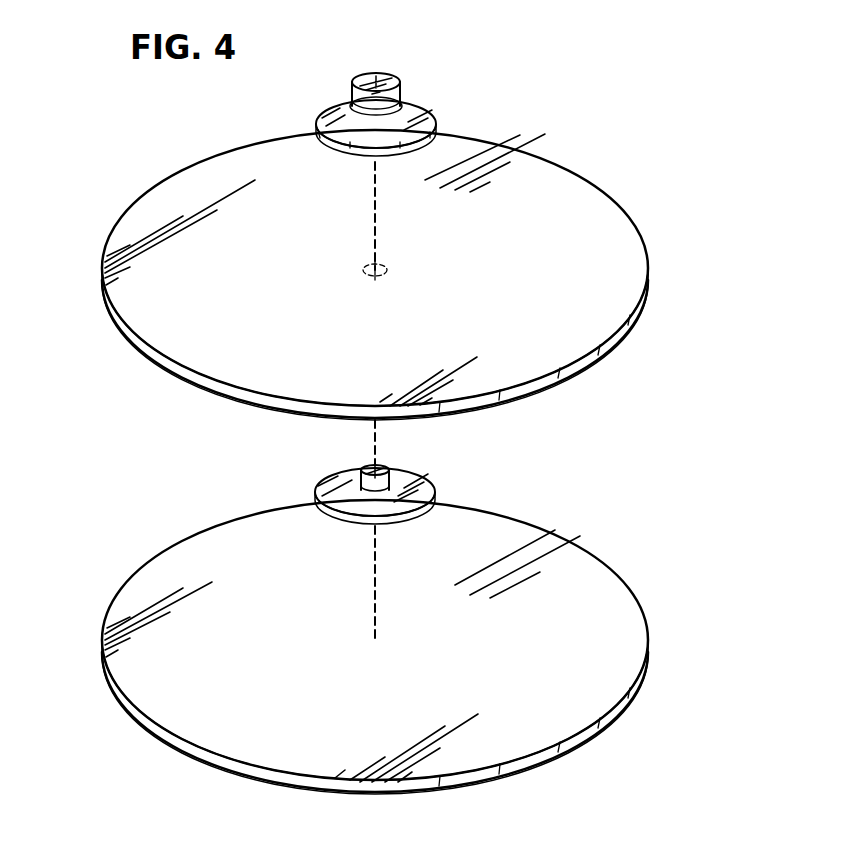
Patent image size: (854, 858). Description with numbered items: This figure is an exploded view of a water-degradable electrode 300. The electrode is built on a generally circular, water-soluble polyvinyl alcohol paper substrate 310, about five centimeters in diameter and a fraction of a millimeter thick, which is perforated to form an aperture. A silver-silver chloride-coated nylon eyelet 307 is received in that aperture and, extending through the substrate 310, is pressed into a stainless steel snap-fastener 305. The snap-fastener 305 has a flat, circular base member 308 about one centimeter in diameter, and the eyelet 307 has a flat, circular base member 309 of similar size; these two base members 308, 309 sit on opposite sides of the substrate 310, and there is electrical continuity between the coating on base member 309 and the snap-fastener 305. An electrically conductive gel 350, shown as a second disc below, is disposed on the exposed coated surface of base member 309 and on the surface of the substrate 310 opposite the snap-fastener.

The electrode 300 is at (598, 124).
The snap-fastener 305 is at (380, 80).
The nylon eyelet 307 is at (384, 470).
The base member 308 is at (428, 118).
The base member 309 is at (432, 492).
The substrate 310 is at (106, 316).
The electrically conductive gel 350 is at (628, 702).